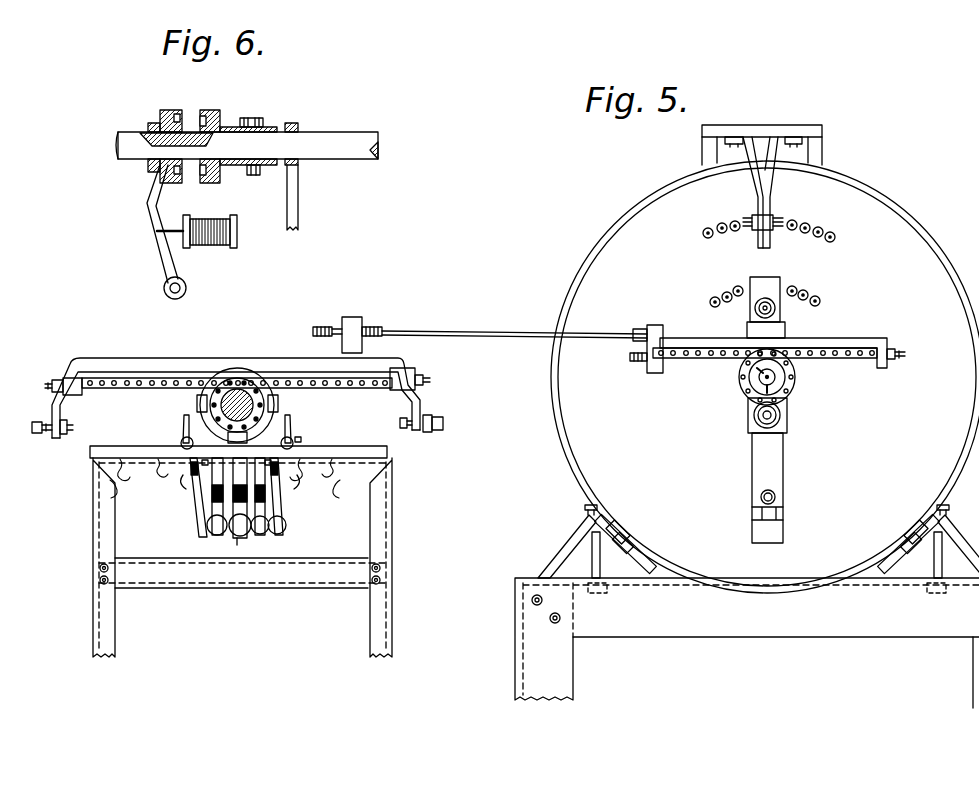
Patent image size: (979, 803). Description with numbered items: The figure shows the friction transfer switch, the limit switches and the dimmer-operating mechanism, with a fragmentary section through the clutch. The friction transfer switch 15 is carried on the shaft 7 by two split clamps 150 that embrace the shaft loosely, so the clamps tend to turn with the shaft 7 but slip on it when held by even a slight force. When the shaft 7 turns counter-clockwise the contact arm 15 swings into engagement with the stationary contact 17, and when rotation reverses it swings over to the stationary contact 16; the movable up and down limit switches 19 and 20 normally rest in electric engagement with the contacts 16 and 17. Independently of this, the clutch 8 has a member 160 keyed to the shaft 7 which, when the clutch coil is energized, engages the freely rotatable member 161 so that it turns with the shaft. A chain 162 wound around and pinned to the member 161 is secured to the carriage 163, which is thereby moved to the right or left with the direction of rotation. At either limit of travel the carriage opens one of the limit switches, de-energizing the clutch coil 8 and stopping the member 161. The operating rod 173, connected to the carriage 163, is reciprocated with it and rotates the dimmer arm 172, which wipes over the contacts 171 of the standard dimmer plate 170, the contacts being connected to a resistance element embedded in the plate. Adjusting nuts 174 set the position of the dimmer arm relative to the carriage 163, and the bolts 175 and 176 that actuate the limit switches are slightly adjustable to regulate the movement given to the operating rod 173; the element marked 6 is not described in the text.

In FIG. 5, the frame 6 is at (912, 197).
In FIG. 6, the shaft 7 is at (353, 137).
In FIG. 5, the shaft 7 is at (243, 386).
In FIG. 6, the clutch 8 is at (220, 234).
In FIG. 6, the friction transfer switch 15 is at (299, 215).
In FIG. 5, the friction transfer switch 15 is at (232, 541).
In FIG. 5, the stationary contact 16 is at (220, 540).
In FIG. 5, the stationary contact 17 is at (271, 524).
In FIG. 5, the limit switch 19 is at (200, 507).
In FIG. 5, the limit switch 20 is at (281, 502).
In FIG. 6, the split clamp 150 is at (296, 123).
In FIG. 5, the split clamp 150 is at (276, 407).
In FIG. 6, the clutch member 160 is at (171, 110).
In FIG. 6, the clutch member 161 is at (214, 110).
In FIG. 6, the chain 162 is at (255, 176).
In FIG. 5, the chain 162 is at (291, 378).
In FIG. 5, the carriage 163 is at (195, 357).
In FIG. 5, the dimmer plate 170 is at (643, 215).
In FIG. 5, the contacts 171 is at (818, 238).
In FIG. 5, the dimmer arm 172 is at (773, 465).
In FIG. 5, the operating rod 173 is at (480, 331).
In FIG. 5, the adjusting nuts 174 is at (339, 319).
In FIG. 5, the bolt 175 is at (440, 428).
In FIG. 5, the bolt 176 is at (33, 430).